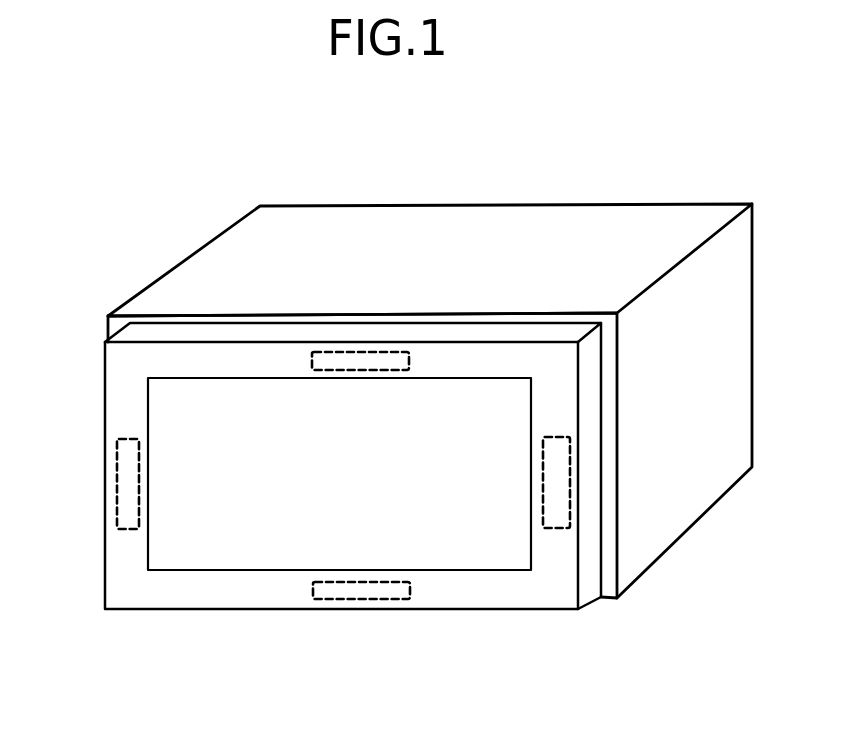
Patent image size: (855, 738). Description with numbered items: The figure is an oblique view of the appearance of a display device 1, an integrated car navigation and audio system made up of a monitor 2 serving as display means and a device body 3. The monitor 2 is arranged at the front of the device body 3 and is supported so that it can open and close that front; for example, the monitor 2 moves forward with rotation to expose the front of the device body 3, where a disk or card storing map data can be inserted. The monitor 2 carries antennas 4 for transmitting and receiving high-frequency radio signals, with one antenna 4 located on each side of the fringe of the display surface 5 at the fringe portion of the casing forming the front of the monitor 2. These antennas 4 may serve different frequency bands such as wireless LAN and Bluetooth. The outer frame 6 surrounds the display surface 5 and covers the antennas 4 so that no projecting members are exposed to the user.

The display device 1 is at (158, 232).
The monitor 2 is at (103, 370).
The device body 3 is at (567, 226).
The antenna 4 is at (375, 348).
The display surface 5 is at (222, 550).
The outer frame 6 is at (120, 580).